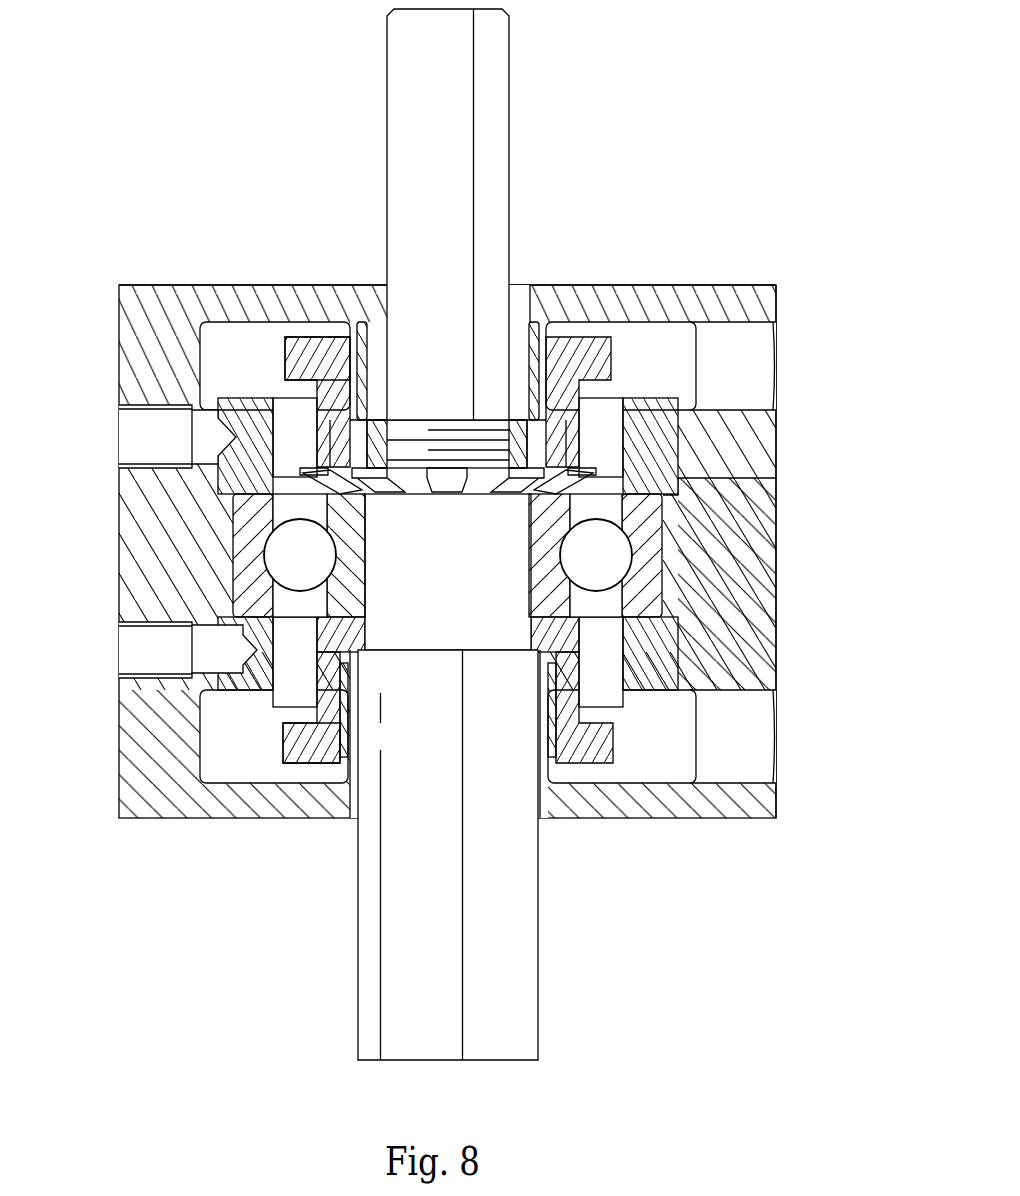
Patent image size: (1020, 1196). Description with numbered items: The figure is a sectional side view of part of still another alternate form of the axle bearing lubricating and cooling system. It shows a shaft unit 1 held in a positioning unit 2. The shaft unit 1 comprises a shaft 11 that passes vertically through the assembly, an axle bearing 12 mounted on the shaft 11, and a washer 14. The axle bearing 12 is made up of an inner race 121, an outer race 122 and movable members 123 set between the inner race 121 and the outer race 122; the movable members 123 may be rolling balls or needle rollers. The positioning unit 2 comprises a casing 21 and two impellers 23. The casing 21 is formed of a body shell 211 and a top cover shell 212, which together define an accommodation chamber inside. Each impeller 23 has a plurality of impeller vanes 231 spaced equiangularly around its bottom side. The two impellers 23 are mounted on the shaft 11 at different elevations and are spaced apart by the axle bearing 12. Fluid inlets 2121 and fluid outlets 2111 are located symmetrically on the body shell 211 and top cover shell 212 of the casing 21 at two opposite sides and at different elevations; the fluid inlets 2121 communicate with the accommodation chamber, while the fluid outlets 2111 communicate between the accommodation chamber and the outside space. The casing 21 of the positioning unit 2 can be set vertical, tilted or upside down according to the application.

The shaft unit 1 is at (449, 534).
The shaft 11 is at (403, 203).
The axle bearing 12 is at (349, 546).
The inner race 121 is at (353, 583).
The outer race 122 is at (247, 590).
The movable members 123 is at (270, 478).
The washer 14 is at (447, 491).
The positioning unit 2 is at (459, 551).
The casing 21 is at (786, 528).
The body shell 211 is at (775, 600).
The fluid outlet 2111 is at (765, 357).
The top cover shell 212 is at (240, 295).
The fluid inlet 2121 is at (130, 432).
The impeller 23 is at (315, 406).
The impeller vanes 231 is at (290, 352).